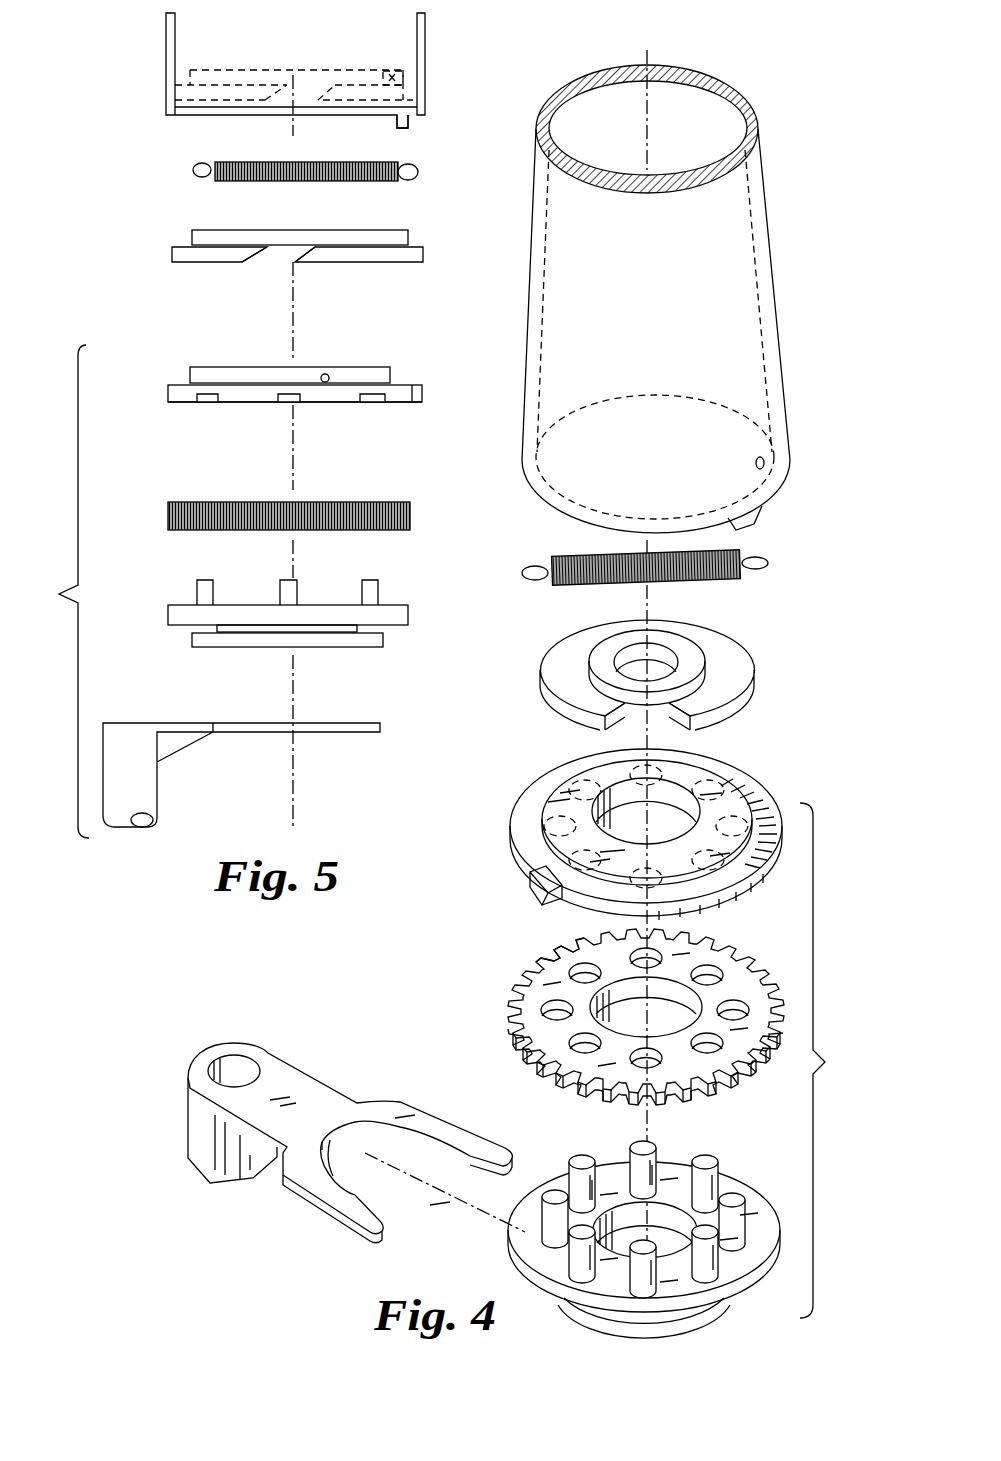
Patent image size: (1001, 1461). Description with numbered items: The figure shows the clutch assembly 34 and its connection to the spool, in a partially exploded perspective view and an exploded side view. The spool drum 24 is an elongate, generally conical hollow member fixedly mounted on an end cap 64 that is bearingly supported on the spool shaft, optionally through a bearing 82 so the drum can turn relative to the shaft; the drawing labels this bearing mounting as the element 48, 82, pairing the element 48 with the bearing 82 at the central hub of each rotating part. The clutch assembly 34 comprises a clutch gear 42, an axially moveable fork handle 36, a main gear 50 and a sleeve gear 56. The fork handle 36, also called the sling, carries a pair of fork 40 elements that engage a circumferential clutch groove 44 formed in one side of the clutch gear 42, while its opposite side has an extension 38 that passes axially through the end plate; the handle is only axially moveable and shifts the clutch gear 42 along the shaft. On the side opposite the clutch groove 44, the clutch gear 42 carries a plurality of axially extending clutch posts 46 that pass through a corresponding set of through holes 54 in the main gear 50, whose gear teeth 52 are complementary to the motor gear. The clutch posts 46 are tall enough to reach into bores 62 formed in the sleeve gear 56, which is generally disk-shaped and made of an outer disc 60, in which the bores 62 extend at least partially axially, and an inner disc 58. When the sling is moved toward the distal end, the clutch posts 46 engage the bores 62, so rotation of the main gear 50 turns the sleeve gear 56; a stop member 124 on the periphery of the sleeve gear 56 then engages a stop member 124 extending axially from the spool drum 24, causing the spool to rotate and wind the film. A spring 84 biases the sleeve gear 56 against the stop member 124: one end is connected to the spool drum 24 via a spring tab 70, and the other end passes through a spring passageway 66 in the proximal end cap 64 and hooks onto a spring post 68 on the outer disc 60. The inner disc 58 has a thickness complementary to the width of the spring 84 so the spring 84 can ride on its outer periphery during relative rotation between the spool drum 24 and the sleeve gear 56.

In FIG. 5, the spool drum 24 is at (166, 37).
In FIG. 4, the spool drum 24 is at (766, 293).
In FIG. 5, the clutch assembly 34 is at (53, 591).
In FIG. 4, the clutch assembly 34 is at (833, 1060).
In FIG. 5, the fork handle 36 is at (125, 723).
In FIG. 4, the fork handle 36 is at (197, 1063).
In FIG. 5, the extension 38 is at (157, 800).
In FIG. 4, the extension 38 is at (187, 1127).
In FIG. 5, the fork 40 is at (348, 733).
In FIG. 4, the fork 40 is at (468, 1158).
In FIG. 5, the clutch gear 42 is at (168, 612).
In FIG. 5, the clutch groove 44 is at (217, 628).
In FIG. 5, the clutch posts 46 is at (362, 592).
In FIG. 4, the clutch posts 46 is at (712, 1162).
In FIG. 5, the central hub bore 48 is at (408, 232).
In FIG. 4, the central hub bore 48 is at (623, 944).
In FIG. 5, the main gear 50 is at (168, 513).
In FIG. 4, the main gear 50 is at (507, 998).
In FIG. 4, the gear teeth 52 is at (553, 985).
In FIG. 4, the through holes 54 is at (613, 1053).
In FIG. 5, the sleeve gear 56 is at (177, 386).
In FIG. 4, the sleeve gear 56 is at (601, 834).
In FIG. 5, the inner disc 58 is at (395, 367).
In FIG. 5, the outer disc 60 is at (405, 402).
In FIG. 4, the outer disc 60 is at (525, 836).
In FIG. 5, the bores 62 is at (361, 445).
In FIG. 4, the bores 62 is at (556, 818).
In FIG. 5, the end cap 64 is at (450, 270).
In FIG. 4, the end cap 64 is at (735, 698).
In FIG. 5, the spring passageway 66 is at (272, 257).
In FIG. 4, the spring passageway 66 is at (625, 738).
In FIG. 5, the spring post 68 is at (326, 373).
In FIG. 5, the spring tab 70 is at (397, 78).
In FIG. 4, the spring tab 70 is at (768, 465).
In FIG. 4, the bearing 82 is at (683, 673).
In FIG. 5, the spring 84 is at (418, 172).
In FIG. 4, the spring 84 is at (768, 566).
In FIG. 5, the stop member 124 is at (458, 420).
In FIG. 4, the stop member 124 is at (530, 890).